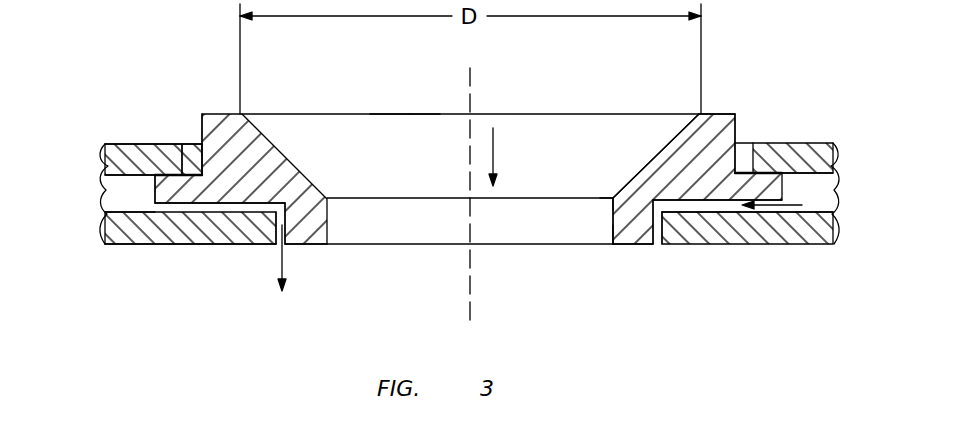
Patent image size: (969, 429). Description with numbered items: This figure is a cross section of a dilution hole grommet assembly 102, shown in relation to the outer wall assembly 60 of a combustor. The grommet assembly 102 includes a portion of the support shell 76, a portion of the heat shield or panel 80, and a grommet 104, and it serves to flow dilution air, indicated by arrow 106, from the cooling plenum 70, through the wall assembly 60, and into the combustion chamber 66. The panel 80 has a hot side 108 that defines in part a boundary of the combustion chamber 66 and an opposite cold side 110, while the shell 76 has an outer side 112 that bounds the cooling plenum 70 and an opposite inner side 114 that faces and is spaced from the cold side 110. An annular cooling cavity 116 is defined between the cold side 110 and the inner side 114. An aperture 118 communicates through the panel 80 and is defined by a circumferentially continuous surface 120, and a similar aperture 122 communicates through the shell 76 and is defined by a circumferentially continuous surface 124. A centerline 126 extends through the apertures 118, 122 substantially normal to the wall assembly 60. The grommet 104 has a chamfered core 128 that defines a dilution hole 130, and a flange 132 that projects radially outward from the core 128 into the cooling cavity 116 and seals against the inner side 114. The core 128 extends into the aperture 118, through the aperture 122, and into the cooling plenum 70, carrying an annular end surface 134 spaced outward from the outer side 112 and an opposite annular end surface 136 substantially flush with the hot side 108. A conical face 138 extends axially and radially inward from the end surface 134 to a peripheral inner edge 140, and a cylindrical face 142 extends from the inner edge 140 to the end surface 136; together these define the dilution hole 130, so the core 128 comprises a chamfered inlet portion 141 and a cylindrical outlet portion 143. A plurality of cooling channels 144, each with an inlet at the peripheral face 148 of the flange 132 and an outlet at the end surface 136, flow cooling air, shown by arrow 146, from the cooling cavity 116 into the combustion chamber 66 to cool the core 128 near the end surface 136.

The outer wall assembly 60 is at (85, 174).
The combustion chamber 66 is at (226, 302).
The cooling plenum 70 is at (310, 84).
The support shell 76 is at (113, 153).
The heat shield panel 80 is at (125, 232).
The dilution hole grommet assembly 102 is at (186, 79).
The grommet 104 is at (392, 108).
The dilution air flow arrow 106 is at (495, 140).
The hot side 108 is at (178, 245).
The cold side 110 is at (105, 205).
The outer side 112 is at (138, 143).
The inner side 114 is at (103, 193).
The annular cooling cavity 116 is at (802, 190).
The aperture 118 is at (385, 237).
The circumferentially continuous surface 120 is at (277, 225).
The aperture 122 is at (192, 153).
The circumferentially continuous surface 124 is at (203, 165).
The centerline 126 is at (474, 80).
The chamfered core 128 is at (423, 108).
The dilution hole 130 is at (391, 171).
The flange 132 is at (177, 190).
The annular end surface 134 is at (720, 112).
The annular end surface 136 is at (640, 245).
The conical face 138 is at (648, 158).
The peripheral inner edge 140 is at (612, 196).
The chamfered inlet portion 141 is at (708, 135).
The cylindrical face 142 is at (612, 217).
The cylindrical outlet portion 143 is at (610, 227).
The cooling channel 144 is at (723, 207).
The cooling air flow arrow 146 is at (282, 288).
The peripheral face 148 is at (137, 236).